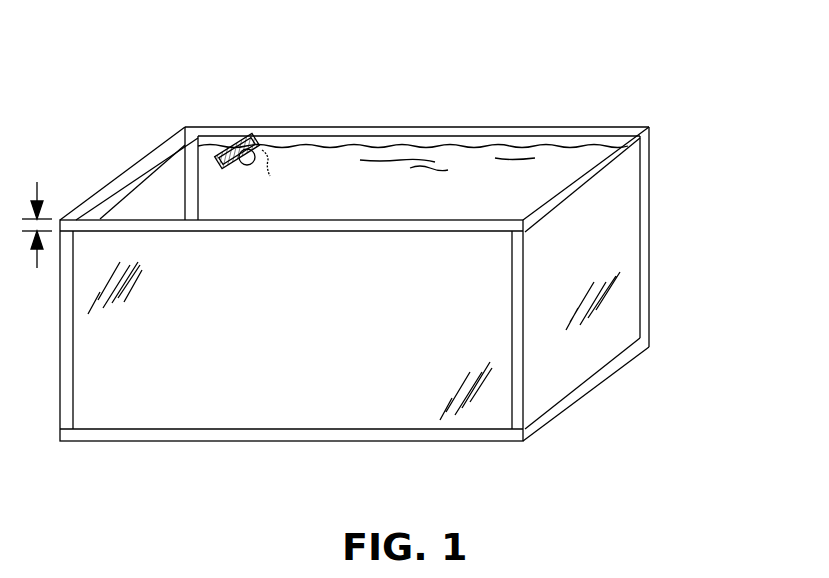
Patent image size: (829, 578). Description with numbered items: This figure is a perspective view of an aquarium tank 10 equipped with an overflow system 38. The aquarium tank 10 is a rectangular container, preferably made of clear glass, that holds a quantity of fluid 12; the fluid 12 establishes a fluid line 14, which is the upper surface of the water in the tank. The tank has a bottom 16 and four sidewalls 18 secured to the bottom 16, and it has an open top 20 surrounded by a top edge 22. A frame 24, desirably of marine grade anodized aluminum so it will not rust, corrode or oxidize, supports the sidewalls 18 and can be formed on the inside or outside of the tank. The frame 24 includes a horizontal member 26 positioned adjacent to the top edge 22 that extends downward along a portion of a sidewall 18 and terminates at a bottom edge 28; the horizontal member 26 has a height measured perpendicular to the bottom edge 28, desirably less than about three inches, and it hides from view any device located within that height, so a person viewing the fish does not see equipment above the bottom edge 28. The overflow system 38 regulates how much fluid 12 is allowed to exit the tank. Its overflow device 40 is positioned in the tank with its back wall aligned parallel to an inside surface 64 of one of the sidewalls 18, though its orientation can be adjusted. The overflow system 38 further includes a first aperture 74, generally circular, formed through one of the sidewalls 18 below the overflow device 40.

The aquarium tank 10 is at (694, 58).
The fluid 12 is at (417, 153).
The fluid line 14 is at (498, 152).
The bottom 16 is at (418, 441).
The sidewalls 18 is at (152, 172).
The open top 20 is at (588, 152).
The top edge 22 is at (125, 170).
The frame 24 is at (320, 227).
The horizontal member 26 is at (223, 227).
The bottom edge 28 is at (273, 232).
The overflow system 38 is at (255, 108).
The overflow device 40 is at (227, 148).
The inside surface 64 is at (298, 145).
The first aperture 74 is at (263, 145).